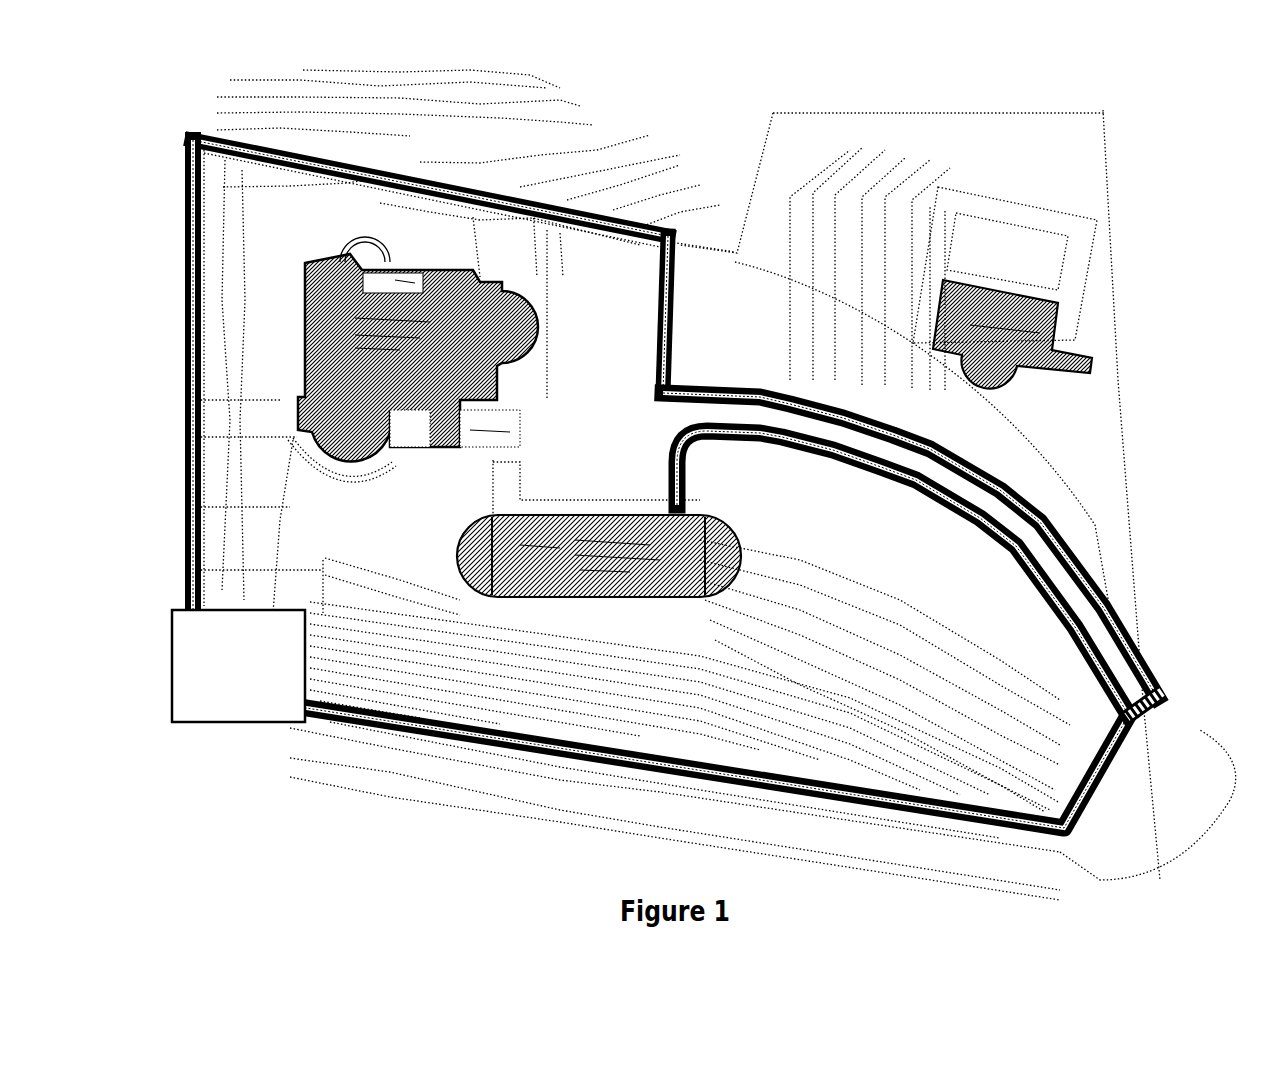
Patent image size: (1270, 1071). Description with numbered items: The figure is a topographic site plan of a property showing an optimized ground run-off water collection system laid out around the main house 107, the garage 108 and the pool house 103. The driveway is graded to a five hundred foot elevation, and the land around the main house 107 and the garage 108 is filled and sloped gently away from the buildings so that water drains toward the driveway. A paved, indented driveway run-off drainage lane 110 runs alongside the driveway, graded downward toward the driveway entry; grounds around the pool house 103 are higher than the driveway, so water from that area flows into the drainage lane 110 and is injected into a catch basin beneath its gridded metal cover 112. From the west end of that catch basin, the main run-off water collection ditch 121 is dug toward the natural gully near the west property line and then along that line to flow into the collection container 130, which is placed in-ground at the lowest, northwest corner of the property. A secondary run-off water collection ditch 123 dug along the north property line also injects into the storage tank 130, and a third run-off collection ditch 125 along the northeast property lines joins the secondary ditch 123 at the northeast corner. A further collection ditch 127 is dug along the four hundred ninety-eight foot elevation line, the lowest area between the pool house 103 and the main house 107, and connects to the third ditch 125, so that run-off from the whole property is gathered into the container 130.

The pool house 103 is at (1085, 322).
The main house 107 is at (478, 387).
The garage 108 is at (692, 591).
The driveway run-off drainage lane 110 is at (1100, 573).
The catch basin gridded metal cover 112 is at (1148, 705).
The main run-off water collection ditch 121 is at (786, 770).
The secondary run-off water collection ditch 123 is at (182, 243).
The third run-off collection ditch 125 is at (458, 161).
The collection ditch 127 is at (697, 353).
The collection container 130 is at (258, 681).